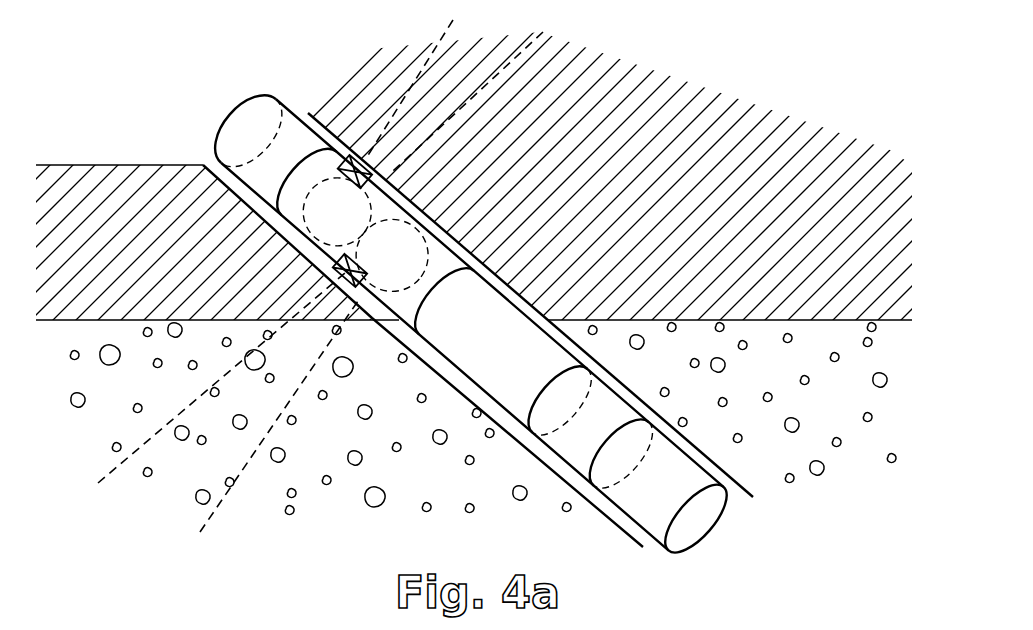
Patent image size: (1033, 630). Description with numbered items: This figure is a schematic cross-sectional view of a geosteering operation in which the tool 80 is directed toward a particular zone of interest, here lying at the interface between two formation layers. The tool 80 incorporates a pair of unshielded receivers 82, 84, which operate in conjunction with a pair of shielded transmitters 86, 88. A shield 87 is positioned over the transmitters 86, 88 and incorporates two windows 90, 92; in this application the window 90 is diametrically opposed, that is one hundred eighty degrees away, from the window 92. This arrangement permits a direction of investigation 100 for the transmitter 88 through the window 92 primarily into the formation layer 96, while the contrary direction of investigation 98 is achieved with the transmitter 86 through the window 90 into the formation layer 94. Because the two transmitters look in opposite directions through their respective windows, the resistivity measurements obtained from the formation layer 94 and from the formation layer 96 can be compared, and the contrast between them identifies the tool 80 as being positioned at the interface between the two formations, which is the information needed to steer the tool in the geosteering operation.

The tool 80 is at (486, 334).
The unshielded receiver 82 is at (540, 385).
The unshielded receiver 84 is at (613, 445).
The shielded transmitter 86 is at (378, 231).
The shield 87 is at (274, 186).
The shielded transmitter 88 is at (312, 198).
The window 90 is at (368, 293).
The window 92 is at (334, 163).
The formation layer 94 is at (866, 484).
The formation layer 96 is at (804, 101).
The direction of investigation 98 is at (151, 515).
The direction of investigation 100 is at (516, 35).